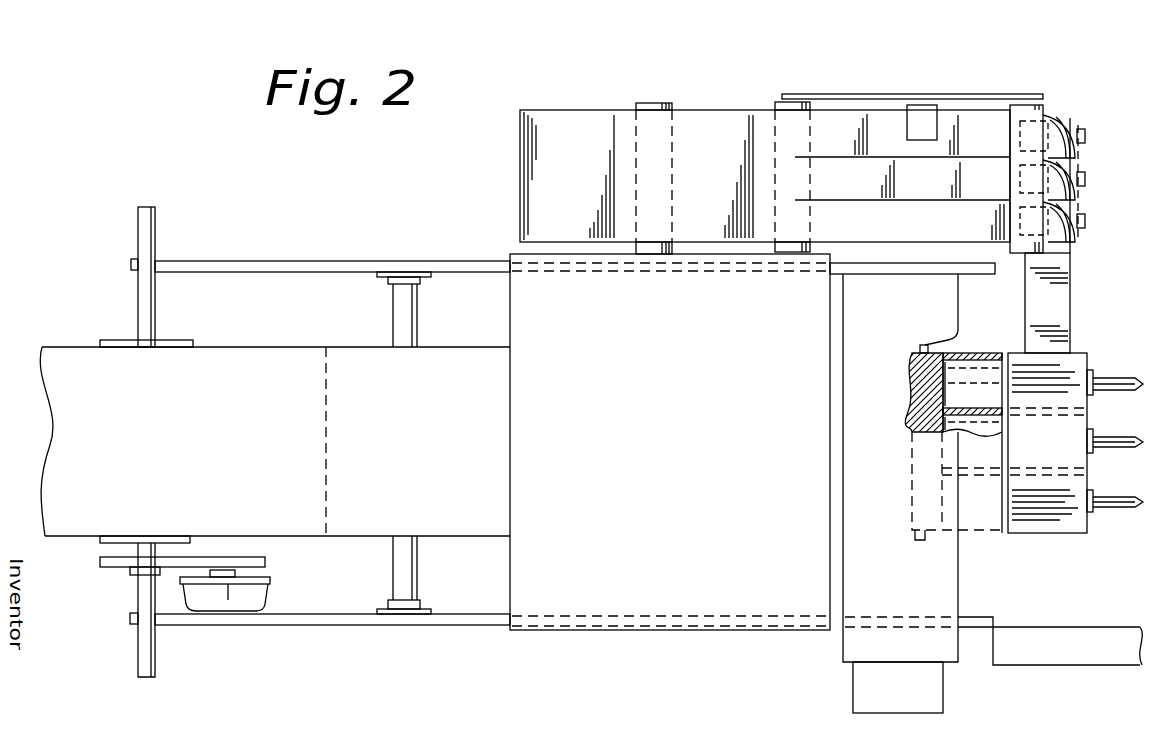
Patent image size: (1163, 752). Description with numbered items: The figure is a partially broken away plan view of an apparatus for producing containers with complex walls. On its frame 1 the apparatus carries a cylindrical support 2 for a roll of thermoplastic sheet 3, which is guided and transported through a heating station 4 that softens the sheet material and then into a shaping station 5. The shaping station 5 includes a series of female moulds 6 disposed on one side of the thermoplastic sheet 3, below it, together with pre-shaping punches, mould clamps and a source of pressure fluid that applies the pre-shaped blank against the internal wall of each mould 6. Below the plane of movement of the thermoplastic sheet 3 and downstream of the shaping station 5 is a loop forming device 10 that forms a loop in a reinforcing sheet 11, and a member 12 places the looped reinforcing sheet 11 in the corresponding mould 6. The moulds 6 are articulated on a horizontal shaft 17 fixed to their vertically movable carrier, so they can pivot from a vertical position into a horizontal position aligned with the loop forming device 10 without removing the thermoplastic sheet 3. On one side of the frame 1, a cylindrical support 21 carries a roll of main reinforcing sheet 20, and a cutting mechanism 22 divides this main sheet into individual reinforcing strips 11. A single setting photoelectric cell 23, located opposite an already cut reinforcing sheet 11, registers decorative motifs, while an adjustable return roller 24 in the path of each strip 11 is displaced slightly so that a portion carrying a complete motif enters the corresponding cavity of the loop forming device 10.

The frame 1 is at (470, 632).
The cylindrical support 2 is at (148, 221).
The thermoplastic sheet 3 is at (65, 362).
The heating station 4 is at (533, 349).
The shaping station 5 is at (867, 494).
The female mould 6 is at (986, 352).
The loop forming device 10 is at (1093, 352).
The reinforcing sheet 11 is at (1066, 263).
The placing member 12 is at (1100, 425).
The horizontal shaft 17 is at (922, 347).
The main reinforcing sheet 20 is at (556, 122).
The cylindrical support 21 is at (658, 105).
The cutting mechanism 22 is at (782, 98).
The setting photoelectric cell 23 is at (921, 105).
The return roller 24 is at (1073, 126).